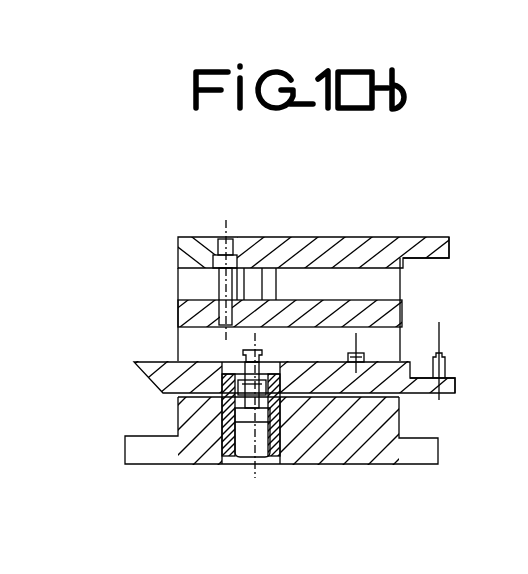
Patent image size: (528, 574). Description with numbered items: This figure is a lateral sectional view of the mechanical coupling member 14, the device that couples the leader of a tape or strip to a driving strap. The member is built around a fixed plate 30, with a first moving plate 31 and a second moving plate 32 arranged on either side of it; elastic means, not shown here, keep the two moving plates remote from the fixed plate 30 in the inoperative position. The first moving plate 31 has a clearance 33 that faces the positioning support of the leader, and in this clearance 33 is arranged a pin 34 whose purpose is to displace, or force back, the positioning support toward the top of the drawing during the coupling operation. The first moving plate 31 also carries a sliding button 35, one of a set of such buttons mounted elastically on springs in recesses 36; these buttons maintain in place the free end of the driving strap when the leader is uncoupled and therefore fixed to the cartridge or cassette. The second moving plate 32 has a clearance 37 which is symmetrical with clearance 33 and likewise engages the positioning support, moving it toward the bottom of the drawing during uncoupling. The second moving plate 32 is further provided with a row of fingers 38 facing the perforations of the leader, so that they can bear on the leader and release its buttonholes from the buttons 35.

The mechanical coupling member 14 is at (116, 336).
The fixed plate 30 is at (377, 316).
The first moving plate 31 is at (165, 368).
The second moving plate 32 is at (370, 250).
The clearance 33 is at (452, 381).
The pin 34 is at (444, 365).
The sliding button 35 is at (262, 362).
The recess 36 is at (272, 414).
The clearance 37 is at (420, 258).
The finger 38 is at (222, 283).